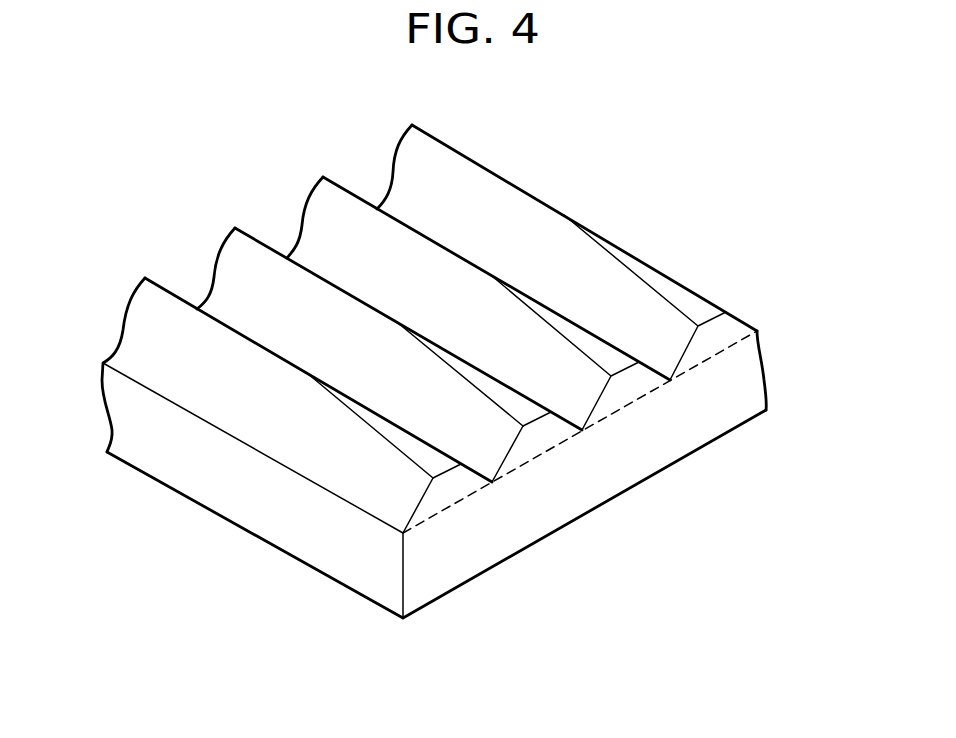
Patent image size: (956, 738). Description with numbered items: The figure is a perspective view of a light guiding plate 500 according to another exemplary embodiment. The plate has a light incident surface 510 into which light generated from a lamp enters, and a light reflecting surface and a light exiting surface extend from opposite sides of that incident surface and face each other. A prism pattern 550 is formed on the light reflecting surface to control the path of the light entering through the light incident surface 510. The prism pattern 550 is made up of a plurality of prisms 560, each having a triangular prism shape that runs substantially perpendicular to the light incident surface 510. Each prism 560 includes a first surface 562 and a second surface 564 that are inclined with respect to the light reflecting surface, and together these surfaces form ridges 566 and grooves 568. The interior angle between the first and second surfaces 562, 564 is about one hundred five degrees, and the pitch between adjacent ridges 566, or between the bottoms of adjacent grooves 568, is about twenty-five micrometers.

The light guiding plate 500 is at (177, 225).
The light incident surface 510 is at (718, 410).
The prism pattern 550 is at (198, 313).
The prisms 560 is at (443, 485).
The first surface 562 is at (423, 495).
The second surface 564 is at (495, 458).
The ridges 566 is at (283, 353).
The grooves 568 is at (468, 466).